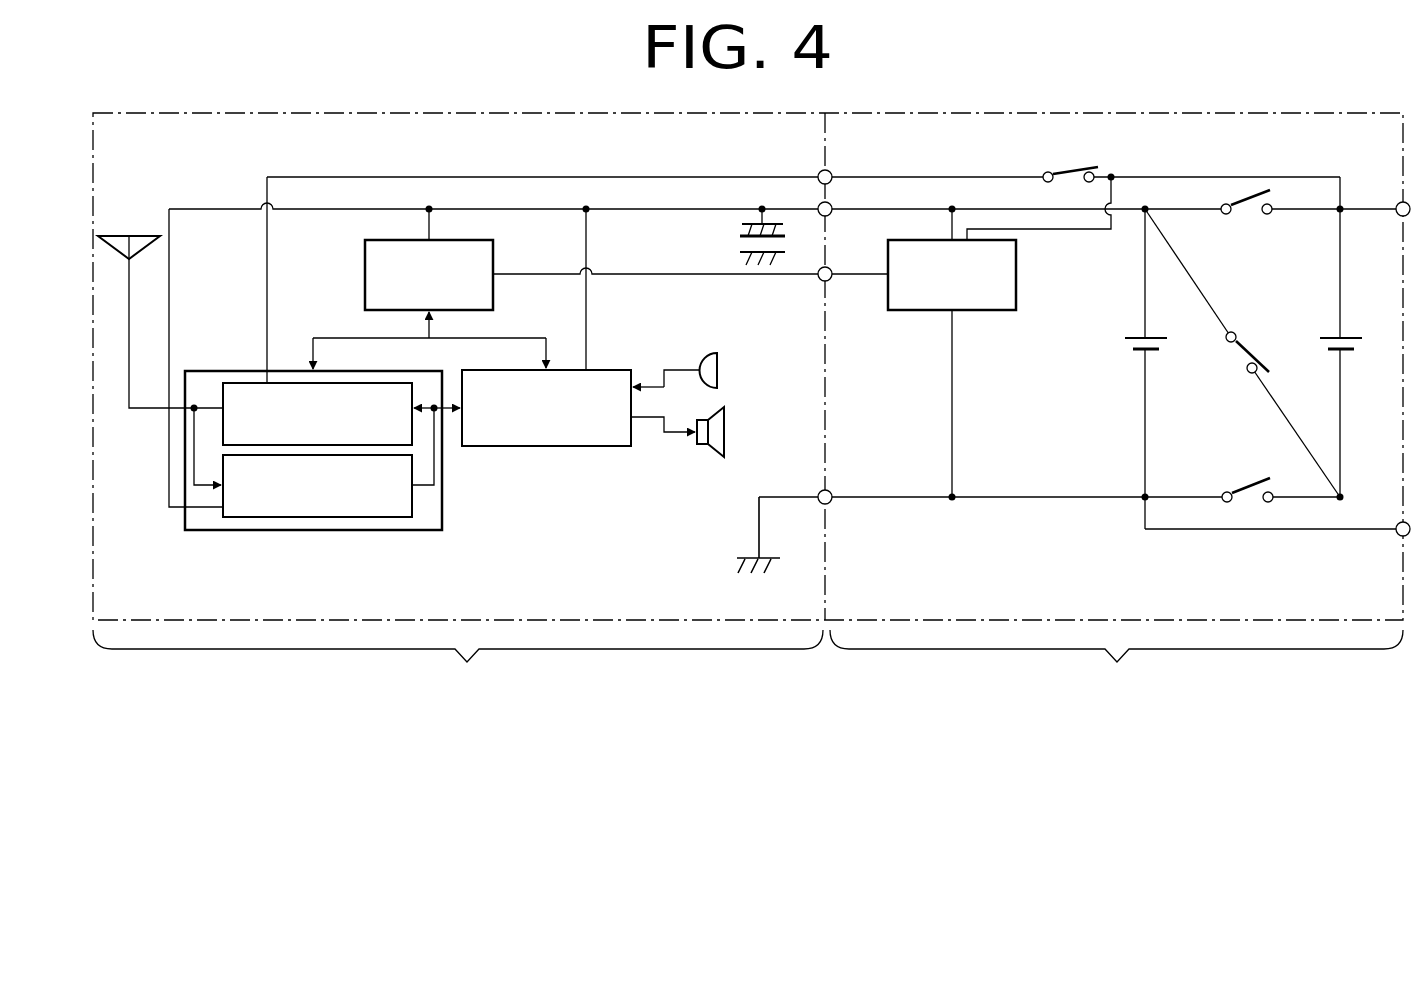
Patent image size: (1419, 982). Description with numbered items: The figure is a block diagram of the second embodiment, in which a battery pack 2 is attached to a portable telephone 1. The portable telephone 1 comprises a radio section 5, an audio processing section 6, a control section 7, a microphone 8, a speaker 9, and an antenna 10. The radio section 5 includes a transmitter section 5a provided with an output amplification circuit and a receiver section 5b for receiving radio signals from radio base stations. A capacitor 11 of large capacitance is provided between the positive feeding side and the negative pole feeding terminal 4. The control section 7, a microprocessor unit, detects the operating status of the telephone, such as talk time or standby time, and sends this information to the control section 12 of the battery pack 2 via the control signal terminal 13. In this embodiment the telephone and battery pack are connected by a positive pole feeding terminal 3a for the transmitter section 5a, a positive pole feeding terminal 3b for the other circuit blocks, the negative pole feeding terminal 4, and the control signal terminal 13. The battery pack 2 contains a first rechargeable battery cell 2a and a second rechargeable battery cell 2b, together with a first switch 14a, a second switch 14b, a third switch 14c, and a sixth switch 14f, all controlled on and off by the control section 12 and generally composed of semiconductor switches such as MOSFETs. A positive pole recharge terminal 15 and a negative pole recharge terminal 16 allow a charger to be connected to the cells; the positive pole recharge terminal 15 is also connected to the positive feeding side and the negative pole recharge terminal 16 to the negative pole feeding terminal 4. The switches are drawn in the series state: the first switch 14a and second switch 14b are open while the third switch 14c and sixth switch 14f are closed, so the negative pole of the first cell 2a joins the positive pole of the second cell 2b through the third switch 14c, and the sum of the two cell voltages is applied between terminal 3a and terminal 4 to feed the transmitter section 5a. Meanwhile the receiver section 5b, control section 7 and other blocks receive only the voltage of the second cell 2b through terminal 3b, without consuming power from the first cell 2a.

The portable telephone 1 is at (458, 664).
The battery pack 2 is at (1116, 664).
The first rechargeable battery cell 2a is at (1357, 351).
The second rechargeable battery cell 2b is at (1124, 348).
The positive pole feeding terminal for the transmitter section 3a is at (832, 170).
The positive pole feeding terminal for other circuit blocks 3b is at (832, 213).
The negative pole feeding terminal 4 is at (830, 503).
The radio section 5 is at (313, 452).
The transmitter section 5a is at (248, 382).
The receiver section 5b is at (283, 518).
The audio processing section 6 is at (543, 447).
The control section 7 is at (364, 274).
The microphone 8 is at (720, 371).
The speaker 9 is at (727, 430).
The antenna 10 is at (135, 235).
The capacitor 11 is at (741, 236).
The control section of the battery pack 12 is at (1017, 274).
The control signal terminal 13 is at (832, 279).
The first switch 14a is at (1247, 197).
The second switch 14b is at (1233, 487).
The third switch 14c is at (1256, 333).
The sixth switch 14f is at (1065, 168).
The positive pole recharge terminal 15 is at (1398, 201).
The negative pole recharge terminal 16 is at (1398, 538).